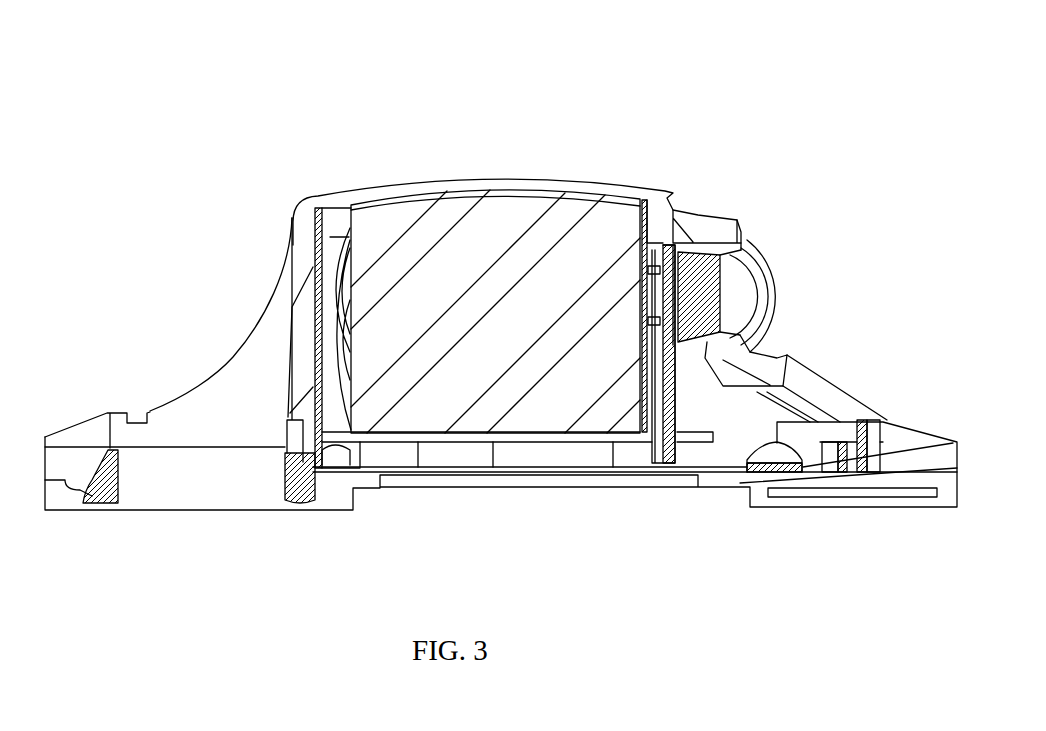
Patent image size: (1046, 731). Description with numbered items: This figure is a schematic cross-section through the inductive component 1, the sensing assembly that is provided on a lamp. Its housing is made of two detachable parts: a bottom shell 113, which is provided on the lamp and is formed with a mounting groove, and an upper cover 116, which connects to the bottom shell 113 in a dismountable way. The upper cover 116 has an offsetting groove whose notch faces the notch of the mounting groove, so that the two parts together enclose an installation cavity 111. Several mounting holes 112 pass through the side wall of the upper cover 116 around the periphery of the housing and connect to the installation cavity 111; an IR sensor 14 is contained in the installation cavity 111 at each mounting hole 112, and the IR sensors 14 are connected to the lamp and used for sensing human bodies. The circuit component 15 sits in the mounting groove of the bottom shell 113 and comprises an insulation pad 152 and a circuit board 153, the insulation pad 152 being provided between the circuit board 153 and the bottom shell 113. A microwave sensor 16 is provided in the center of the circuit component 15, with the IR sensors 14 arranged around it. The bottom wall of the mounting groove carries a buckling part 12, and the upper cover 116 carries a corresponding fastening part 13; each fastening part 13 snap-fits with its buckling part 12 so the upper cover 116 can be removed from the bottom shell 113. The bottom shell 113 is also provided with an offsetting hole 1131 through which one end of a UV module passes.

The inductive component 1 is at (487, 31).
The installation cavity 111 is at (342, 212).
The mounting hole 112 is at (750, 246).
The bottom shell 113 is at (50, 510).
The offsetting hole 1131 is at (180, 460).
The upper cover 116 is at (305, 250).
The buckling part 12 is at (858, 421).
The fastening part 13 is at (879, 452).
The IR sensor 14 is at (776, 294).
The circuit component 15 is at (707, 540).
The insulation pad 152 is at (533, 470).
The circuit board 153 is at (625, 436).
The microwave sensor 16 is at (475, 246).